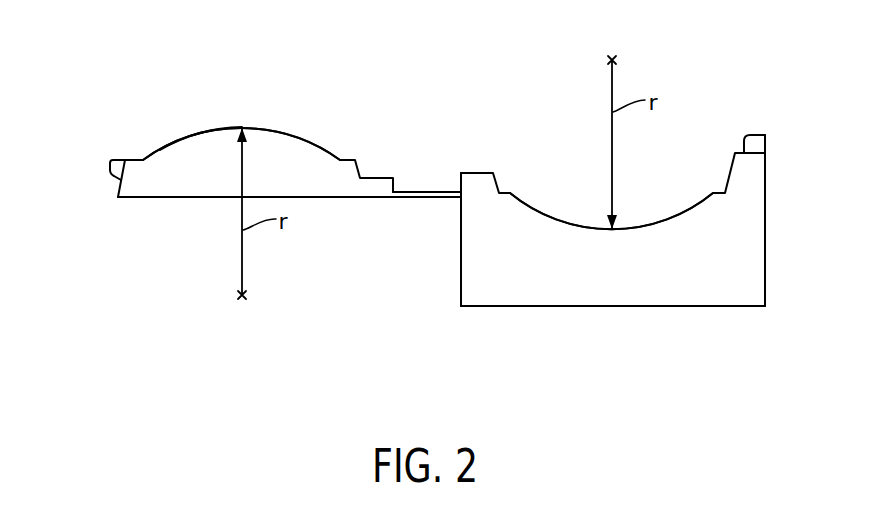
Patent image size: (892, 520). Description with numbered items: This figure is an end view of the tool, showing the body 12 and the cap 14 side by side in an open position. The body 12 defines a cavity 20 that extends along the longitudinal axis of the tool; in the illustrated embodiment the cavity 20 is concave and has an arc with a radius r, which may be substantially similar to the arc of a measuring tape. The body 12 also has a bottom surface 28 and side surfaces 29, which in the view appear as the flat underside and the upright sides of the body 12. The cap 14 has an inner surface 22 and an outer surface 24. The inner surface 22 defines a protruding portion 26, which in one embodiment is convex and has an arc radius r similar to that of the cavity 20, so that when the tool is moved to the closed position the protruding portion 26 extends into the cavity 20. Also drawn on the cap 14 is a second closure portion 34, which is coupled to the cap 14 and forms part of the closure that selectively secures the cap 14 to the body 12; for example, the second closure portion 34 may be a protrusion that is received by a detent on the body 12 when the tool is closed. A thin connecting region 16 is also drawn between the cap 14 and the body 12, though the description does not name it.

The body 12 is at (757, 347).
The cap 14 is at (80, 113).
The connecting web 16 is at (416, 172).
The cavity 20 is at (647, 196).
The inner surface 22 is at (280, 100).
The outer surface 24 is at (150, 198).
The protruding portion 26 is at (190, 135).
The bottom surface 28 is at (648, 306).
The side surfaces 29 is at (460, 271).
The second closure portion 34 is at (110, 172).